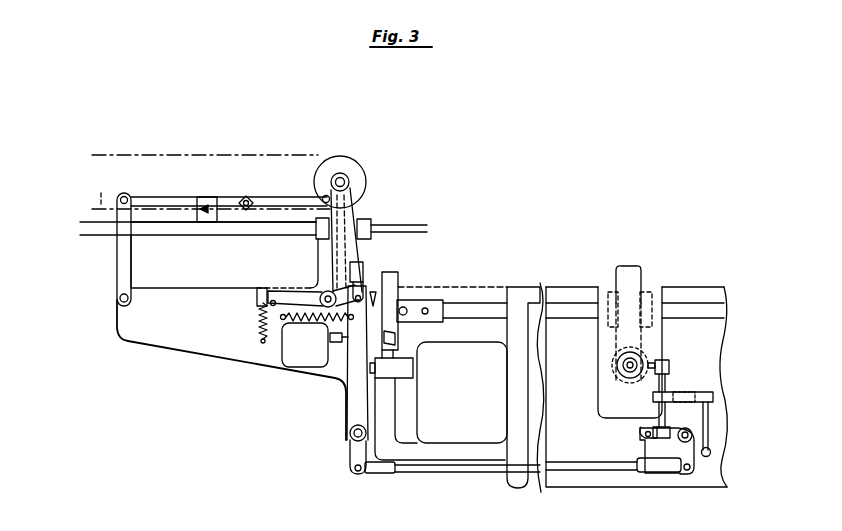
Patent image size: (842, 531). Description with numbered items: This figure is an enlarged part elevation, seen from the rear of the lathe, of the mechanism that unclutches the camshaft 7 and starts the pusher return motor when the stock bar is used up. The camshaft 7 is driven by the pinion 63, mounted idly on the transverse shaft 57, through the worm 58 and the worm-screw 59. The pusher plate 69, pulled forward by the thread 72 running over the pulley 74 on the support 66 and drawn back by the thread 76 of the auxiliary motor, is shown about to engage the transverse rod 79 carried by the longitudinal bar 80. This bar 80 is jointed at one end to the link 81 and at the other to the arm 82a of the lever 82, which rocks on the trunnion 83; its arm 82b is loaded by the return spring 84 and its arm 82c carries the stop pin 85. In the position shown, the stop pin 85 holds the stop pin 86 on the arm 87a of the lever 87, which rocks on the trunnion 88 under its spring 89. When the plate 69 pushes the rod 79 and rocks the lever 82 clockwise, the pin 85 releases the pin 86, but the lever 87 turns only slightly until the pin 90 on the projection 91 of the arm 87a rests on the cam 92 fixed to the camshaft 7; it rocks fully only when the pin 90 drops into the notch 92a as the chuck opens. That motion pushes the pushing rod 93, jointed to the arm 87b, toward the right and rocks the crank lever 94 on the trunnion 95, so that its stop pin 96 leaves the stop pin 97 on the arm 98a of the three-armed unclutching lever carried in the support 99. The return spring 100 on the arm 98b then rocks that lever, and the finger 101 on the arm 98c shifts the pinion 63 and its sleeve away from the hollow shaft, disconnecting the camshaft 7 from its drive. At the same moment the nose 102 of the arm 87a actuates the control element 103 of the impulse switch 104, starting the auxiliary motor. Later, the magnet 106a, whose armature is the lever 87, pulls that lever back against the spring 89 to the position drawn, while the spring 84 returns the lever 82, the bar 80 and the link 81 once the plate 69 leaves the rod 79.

The camshaft 7 is at (566, 301).
The transverse shaft 57 is at (627, 365).
The worm 58 is at (618, 356).
The worm-screw 59 is at (629, 268).
The pinion 63 is at (617, 378).
The support 66 is at (347, 198).
The plate 69 is at (200, 197).
The thread 72 is at (240, 154).
The pulley 74 is at (340, 157).
The thread 76 is at (210, 192).
The transverse rod 79 is at (251, 197).
The longitudinal bar 80 is at (292, 205).
The link 81 is at (118, 263).
The lever 82 is at (331, 228).
The arm of lever 82 82a is at (331, 210).
The arm of lever 82 82b is at (262, 289).
The arm of lever 82 82c is at (331, 337).
The trunnion 83 is at (321, 292).
The return spring 84 is at (261, 318).
The stop pin 85 is at (373, 297).
The stop pin 86 is at (350, 267).
The lever 87 is at (362, 392).
The arm of lever 87 87a is at (349, 283).
The arm of lever 87 87b is at (352, 458).
The trunnion 88 is at (350, 432).
The spring 89 is at (258, 300).
The pin 90 is at (404, 309).
The projection 91 is at (418, 323).
The cam 92 is at (392, 280).
The notch 92a is at (394, 340).
The pushing rod 93 is at (466, 470).
The crank lever 94 is at (687, 470).
The trunnion 95 is at (693, 435).
The stop pin 96 is at (647, 436).
The stop pin 97 is at (645, 432).
The arm of unclutching lever 98 98a is at (658, 412).
The arm of unclutching lever 98 98b is at (706, 421).
The arm of unclutching lever 98 98c is at (668, 381).
The support 99 is at (680, 393).
The return spring 100 is at (710, 452).
The finger 101 is at (657, 372).
The nose 102 is at (231, 370).
The control element 103 is at (329, 350).
The impulse switch 104 is at (283, 351).
The magnet 106a is at (403, 367).